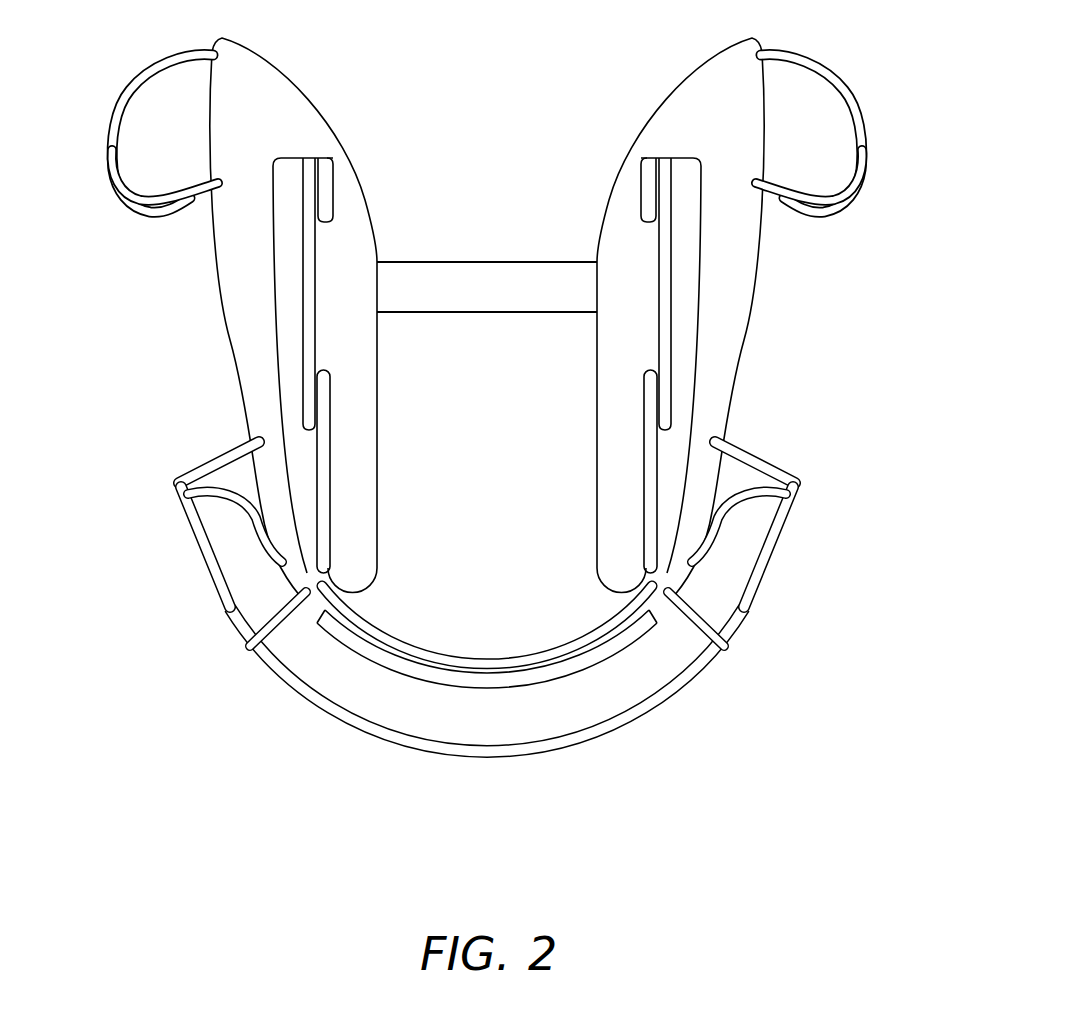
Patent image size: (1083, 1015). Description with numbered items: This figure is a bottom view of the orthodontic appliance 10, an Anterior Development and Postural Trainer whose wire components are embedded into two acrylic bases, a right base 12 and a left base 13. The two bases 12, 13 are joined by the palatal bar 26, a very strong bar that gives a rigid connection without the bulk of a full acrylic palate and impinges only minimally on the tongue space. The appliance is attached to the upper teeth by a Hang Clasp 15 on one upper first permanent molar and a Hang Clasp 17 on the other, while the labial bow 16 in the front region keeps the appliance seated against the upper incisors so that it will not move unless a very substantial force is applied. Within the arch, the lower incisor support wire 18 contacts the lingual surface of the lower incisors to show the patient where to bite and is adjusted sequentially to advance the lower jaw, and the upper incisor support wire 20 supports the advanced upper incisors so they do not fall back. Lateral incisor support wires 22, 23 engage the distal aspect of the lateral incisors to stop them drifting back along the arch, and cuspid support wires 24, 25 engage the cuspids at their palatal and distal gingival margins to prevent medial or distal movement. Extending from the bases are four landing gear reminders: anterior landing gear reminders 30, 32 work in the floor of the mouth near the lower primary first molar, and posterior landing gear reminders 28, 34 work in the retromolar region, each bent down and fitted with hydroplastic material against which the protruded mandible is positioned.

The orthodontic appliance 10 is at (430, 118).
The right base 12 is at (282, 317).
The left base 13 is at (696, 317).
The Hang Clasp 15 is at (127, 88).
The Hang Clasp 17 is at (835, 84).
The labial bow 16 is at (482, 757).
The lower incisor support wire 18 is at (397, 642).
The upper incisor support wire 20 is at (553, 673).
The lateral incisor support wire 22 is at (263, 640).
The lateral incisor support wire 23 is at (700, 622).
The cuspid support wire 24 is at (213, 485).
The cuspid support wire 25 is at (761, 485).
The palatal bar 26 is at (424, 262).
The posterior landing gear reminder 28 is at (313, 297).
The anterior landing gear reminder 30 is at (325, 490).
The anterior landing gear reminder 32 is at (648, 492).
The posterior landing gear reminder 34 is at (657, 312).